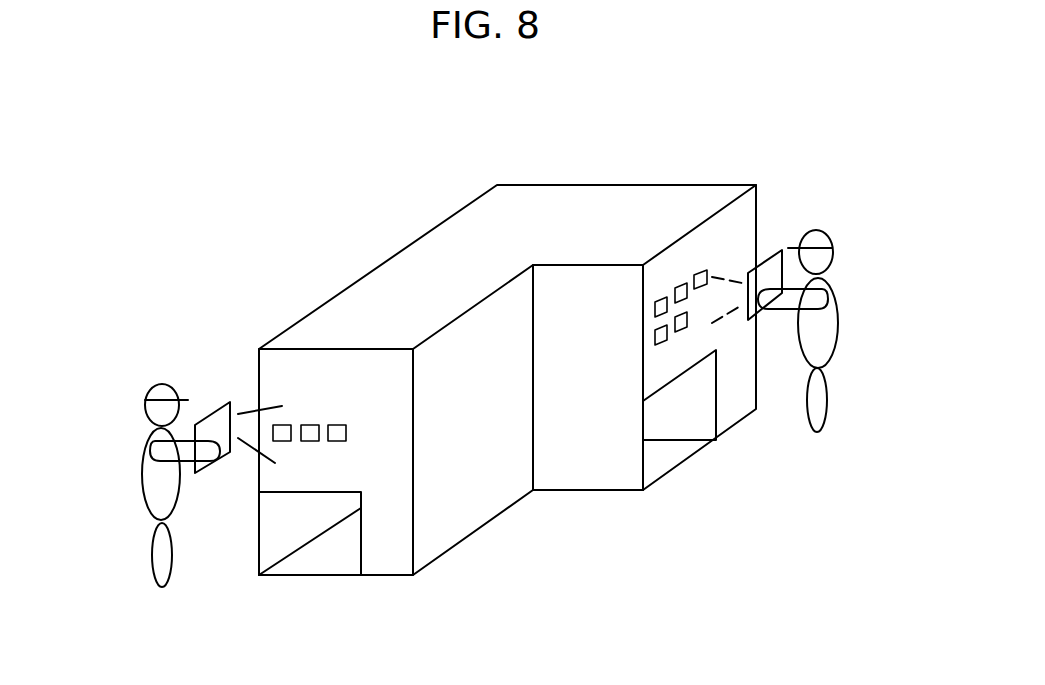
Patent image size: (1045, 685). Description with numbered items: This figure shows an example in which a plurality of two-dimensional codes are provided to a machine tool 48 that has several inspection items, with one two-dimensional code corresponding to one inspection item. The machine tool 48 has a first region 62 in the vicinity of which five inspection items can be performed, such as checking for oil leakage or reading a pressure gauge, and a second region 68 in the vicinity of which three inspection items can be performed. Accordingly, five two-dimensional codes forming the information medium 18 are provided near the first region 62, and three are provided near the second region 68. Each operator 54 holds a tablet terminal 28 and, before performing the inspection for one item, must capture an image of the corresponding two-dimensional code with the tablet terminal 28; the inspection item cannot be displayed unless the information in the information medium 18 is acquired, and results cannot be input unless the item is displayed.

The machine tool 48 is at (398, 201).
The information medium 18 is at (490, 261).
The tablet terminal 28 is at (208, 408).
The operator 54 is at (150, 377).
The first region 62 is at (655, 454).
The second region 68 is at (333, 550).